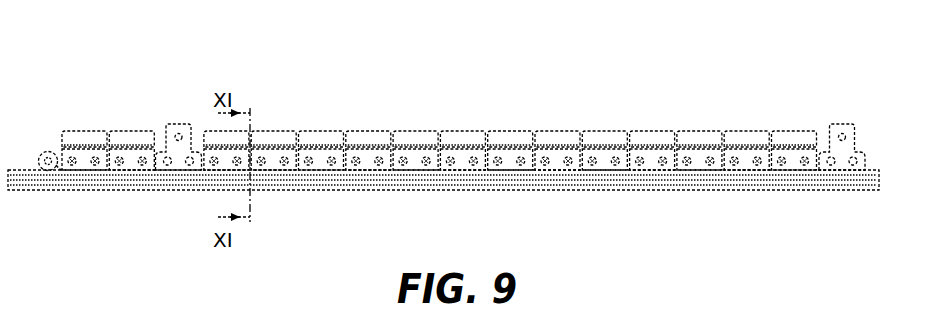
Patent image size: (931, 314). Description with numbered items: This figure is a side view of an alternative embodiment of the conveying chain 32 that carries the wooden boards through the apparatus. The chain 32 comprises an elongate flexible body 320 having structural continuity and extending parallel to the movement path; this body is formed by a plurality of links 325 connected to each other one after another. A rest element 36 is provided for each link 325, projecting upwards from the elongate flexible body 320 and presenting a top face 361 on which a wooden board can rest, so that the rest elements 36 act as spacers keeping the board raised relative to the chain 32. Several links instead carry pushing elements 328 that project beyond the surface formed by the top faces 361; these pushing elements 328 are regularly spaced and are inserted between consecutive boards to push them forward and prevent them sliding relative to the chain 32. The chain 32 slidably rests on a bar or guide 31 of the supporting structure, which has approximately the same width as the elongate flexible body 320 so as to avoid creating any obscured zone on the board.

The bar or guide 31 is at (718, 174).
The chain 32 is at (439, 127).
The elongate flexible body 320 is at (33, 153).
The link 325 is at (390, 170).
The pushing element 328 is at (176, 122).
The rest element 36 is at (468, 138).
The top face 361 is at (593, 130).